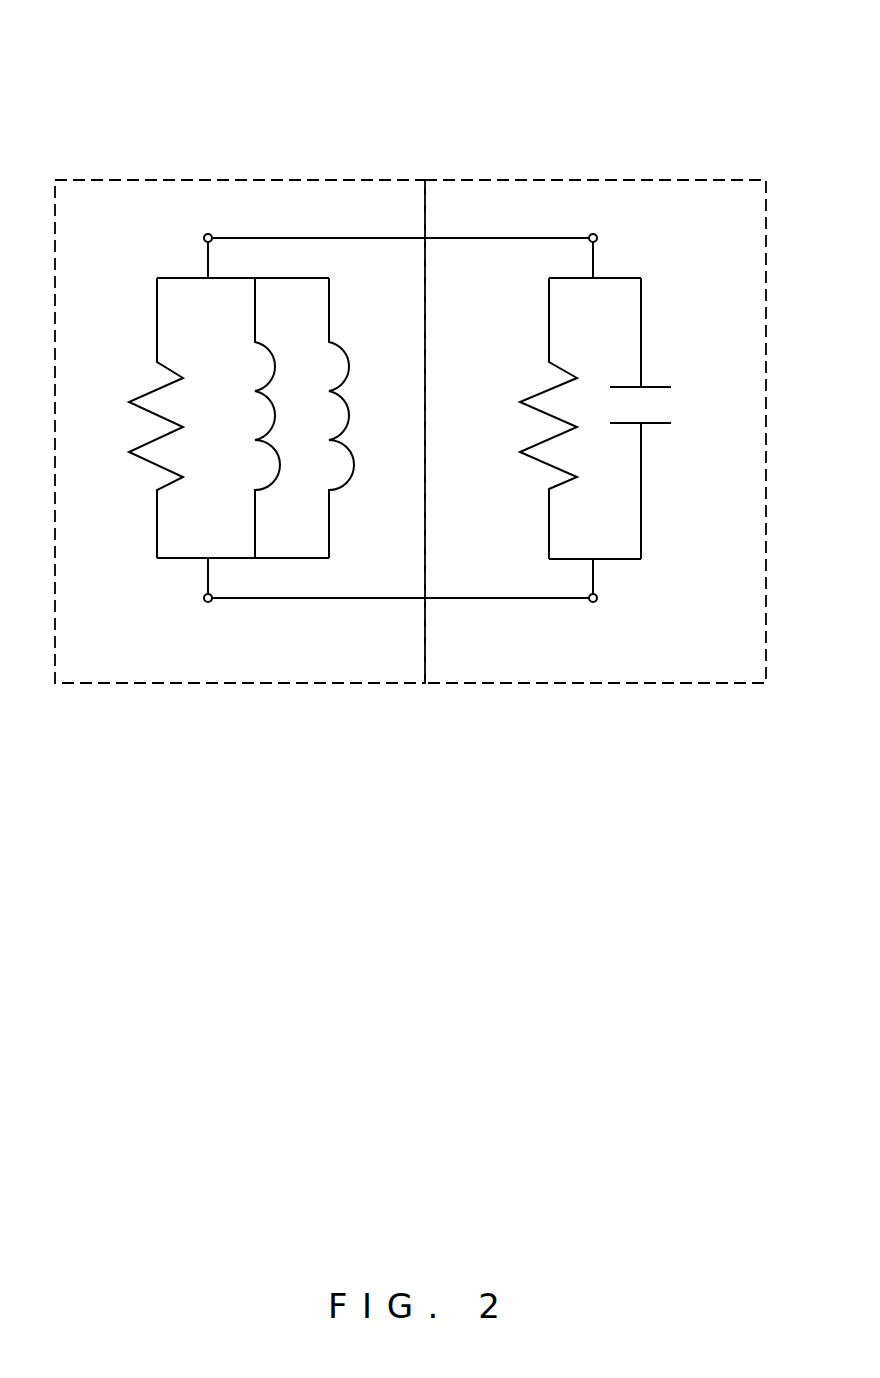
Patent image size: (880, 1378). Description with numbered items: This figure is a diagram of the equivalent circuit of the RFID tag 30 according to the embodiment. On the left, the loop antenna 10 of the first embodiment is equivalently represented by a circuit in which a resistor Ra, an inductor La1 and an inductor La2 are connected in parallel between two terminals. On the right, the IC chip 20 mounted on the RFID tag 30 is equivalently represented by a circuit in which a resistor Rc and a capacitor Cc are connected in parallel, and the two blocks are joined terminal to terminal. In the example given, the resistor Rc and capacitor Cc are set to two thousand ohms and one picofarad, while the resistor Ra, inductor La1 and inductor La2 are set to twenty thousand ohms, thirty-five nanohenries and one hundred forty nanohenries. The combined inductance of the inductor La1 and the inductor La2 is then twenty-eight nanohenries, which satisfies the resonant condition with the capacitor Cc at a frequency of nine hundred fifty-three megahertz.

The RFID tag 30 is at (428, 55).
The loop antenna 10 is at (237, 179).
The IC chip 20 is at (610, 179).
The resistor Ra is at (144, 418).
The inductor La1 is at (280, 418).
The inductor La2 is at (355, 418).
The resistor Rc is at (542, 418).
The capacitor Cc is at (659, 418).